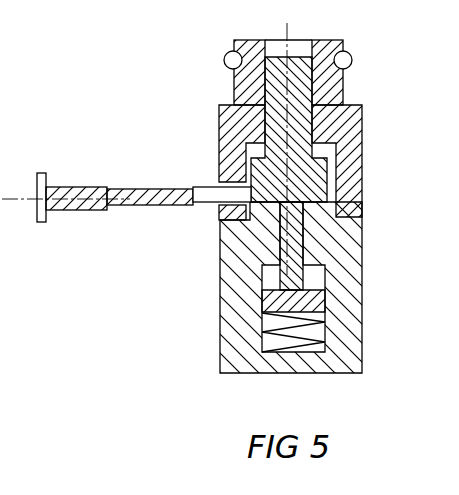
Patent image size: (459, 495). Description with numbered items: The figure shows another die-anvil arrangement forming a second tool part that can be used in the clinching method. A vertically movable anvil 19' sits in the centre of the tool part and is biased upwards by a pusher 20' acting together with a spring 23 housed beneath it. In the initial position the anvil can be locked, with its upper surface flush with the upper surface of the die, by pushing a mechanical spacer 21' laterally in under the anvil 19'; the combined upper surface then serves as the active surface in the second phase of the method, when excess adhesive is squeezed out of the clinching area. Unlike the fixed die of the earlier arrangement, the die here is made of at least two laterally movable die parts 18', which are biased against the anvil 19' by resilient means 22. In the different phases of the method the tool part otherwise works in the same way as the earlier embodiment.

The laterally movable die part 18' is at (311, 206).
The anvil 19' is at (335, 149).
The pusher 20' is at (340, 257).
The mechanical spacer 21' is at (126, 184).
The resilient means 22 is at (350, 55).
The spring 23 is at (318, 323).